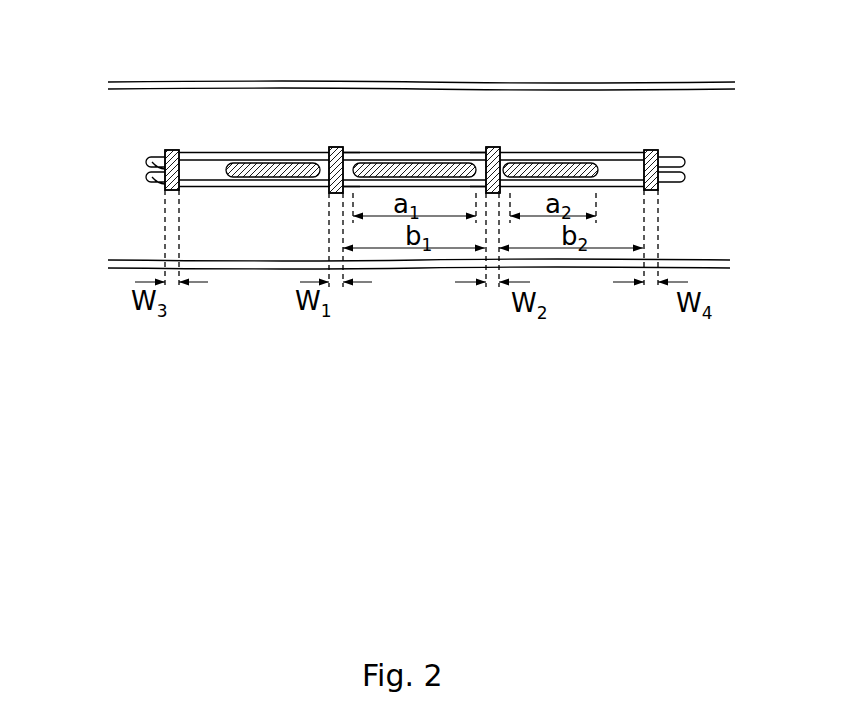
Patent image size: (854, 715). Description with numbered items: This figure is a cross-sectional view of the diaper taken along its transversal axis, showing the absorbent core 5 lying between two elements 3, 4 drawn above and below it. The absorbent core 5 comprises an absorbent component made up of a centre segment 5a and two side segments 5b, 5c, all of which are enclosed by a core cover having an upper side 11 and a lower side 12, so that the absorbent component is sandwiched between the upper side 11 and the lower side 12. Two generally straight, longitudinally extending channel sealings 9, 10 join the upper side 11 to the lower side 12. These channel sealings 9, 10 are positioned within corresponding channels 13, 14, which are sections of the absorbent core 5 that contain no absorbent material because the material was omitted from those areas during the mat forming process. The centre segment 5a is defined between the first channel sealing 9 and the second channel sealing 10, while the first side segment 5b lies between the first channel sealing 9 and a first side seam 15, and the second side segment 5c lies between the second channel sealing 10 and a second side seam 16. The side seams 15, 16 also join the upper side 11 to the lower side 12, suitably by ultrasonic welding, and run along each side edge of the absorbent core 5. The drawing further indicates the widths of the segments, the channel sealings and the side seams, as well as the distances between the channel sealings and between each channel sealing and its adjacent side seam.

The upper vessel wall 3 is at (146, 82).
The lower vessel wall 4 is at (122, 269).
The absorbent core 5 is at (403, 133).
The centre segment 5a is at (416, 160).
The first side segment 5b is at (296, 152).
The second side segment 5c is at (555, 160).
The first channel sealing 9 is at (330, 190).
The second channel sealing 10 is at (500, 148).
The upper side 11 is at (688, 163).
The lower side 12 is at (676, 186).
The first channel 13 is at (350, 152).
The second channel 14 is at (483, 150).
The first side seam 15 is at (162, 190).
The second side seam 16 is at (657, 150).